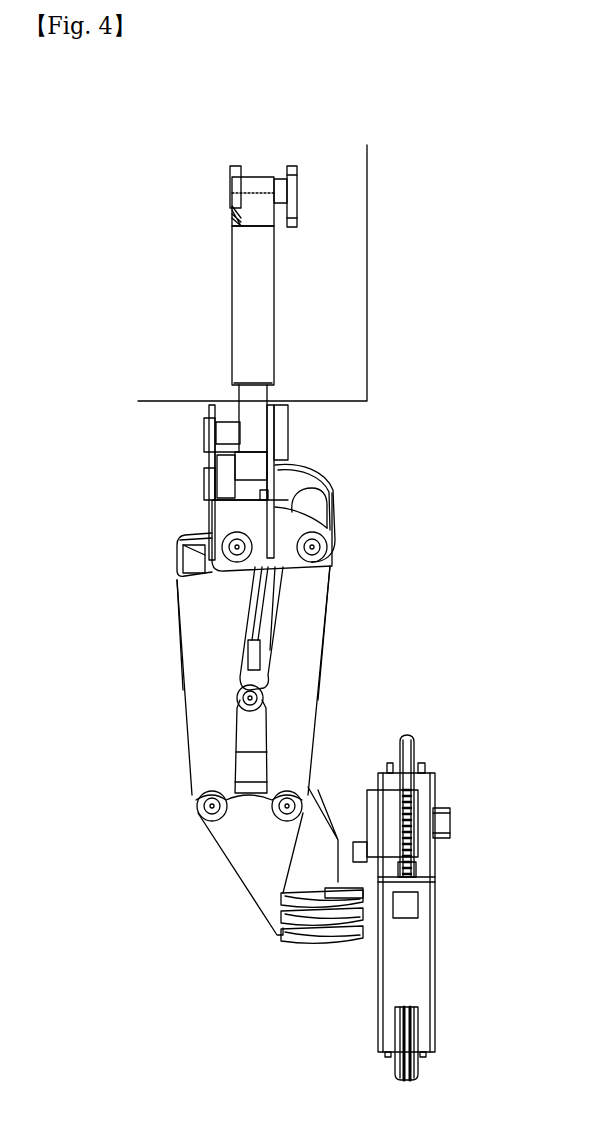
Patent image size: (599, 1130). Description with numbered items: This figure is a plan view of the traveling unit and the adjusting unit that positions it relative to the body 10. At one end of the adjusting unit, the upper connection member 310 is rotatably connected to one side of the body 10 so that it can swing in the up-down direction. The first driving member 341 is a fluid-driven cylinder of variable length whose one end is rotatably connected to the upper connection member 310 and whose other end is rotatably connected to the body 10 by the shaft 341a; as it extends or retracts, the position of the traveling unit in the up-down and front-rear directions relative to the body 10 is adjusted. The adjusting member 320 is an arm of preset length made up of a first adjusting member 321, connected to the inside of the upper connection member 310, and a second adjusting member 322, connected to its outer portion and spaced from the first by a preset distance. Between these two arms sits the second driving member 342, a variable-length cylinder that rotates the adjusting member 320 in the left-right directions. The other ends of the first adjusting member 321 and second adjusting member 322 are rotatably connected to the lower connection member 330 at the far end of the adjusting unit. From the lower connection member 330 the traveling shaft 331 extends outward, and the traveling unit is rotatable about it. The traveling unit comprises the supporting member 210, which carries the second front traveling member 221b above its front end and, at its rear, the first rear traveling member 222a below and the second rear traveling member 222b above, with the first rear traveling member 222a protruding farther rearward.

The body 10 is at (367, 345).
The first driving member 341 is at (246, 299).
The shaft 341a is at (278, 185).
The upper connection member 310 is at (227, 517).
The adjusting member 320 is at (408, 593).
The first adjusting member 321 is at (232, 603).
The second adjusting member 322 is at (305, 663).
The second driving member 342 is at (252, 642).
The traveling shaft 331 is at (345, 882).
The lower connection member 330 is at (247, 863).
The supporting member 210 is at (418, 978).
The first rear traveling member 222a is at (415, 745).
The second rear traveling member 222b is at (433, 875).
The second front traveling member 221b is at (417, 1065).